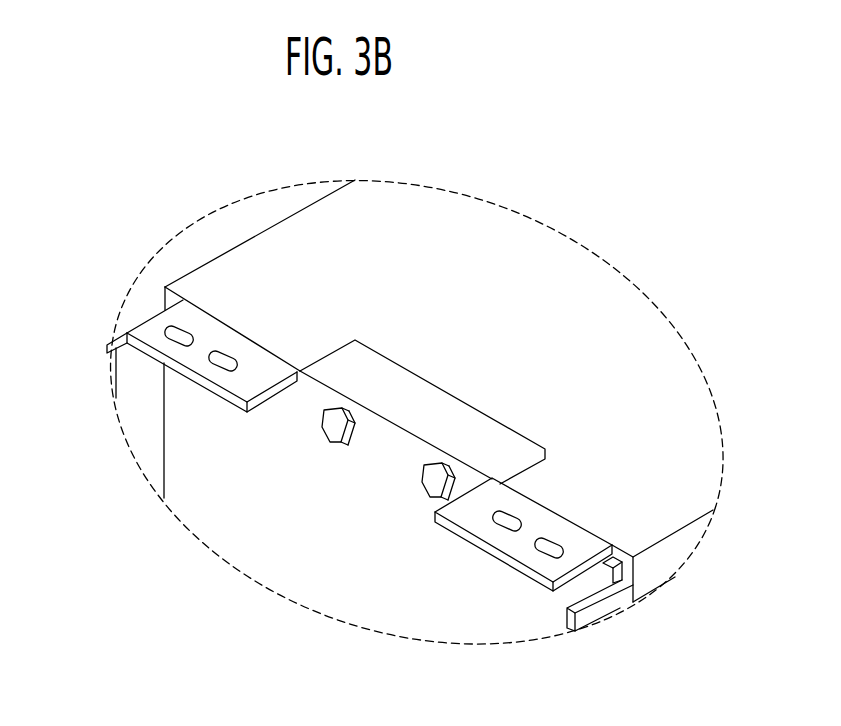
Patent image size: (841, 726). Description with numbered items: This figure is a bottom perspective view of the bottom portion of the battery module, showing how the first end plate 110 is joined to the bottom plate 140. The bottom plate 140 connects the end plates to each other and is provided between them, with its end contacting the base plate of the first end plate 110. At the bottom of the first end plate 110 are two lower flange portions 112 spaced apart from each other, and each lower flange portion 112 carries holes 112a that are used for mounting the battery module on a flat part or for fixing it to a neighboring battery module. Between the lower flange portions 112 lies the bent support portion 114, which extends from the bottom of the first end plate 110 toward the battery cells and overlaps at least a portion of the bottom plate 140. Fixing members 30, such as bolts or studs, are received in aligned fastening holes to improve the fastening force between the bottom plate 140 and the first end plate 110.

The first end plate 110 is at (257, 517).
The lower flange portion 112 is at (168, 350).
The hole 112a is at (222, 359).
The bent support portion 114 is at (387, 378).
The fixing member 30 is at (330, 438).
The bottom plate 140 is at (636, 347).